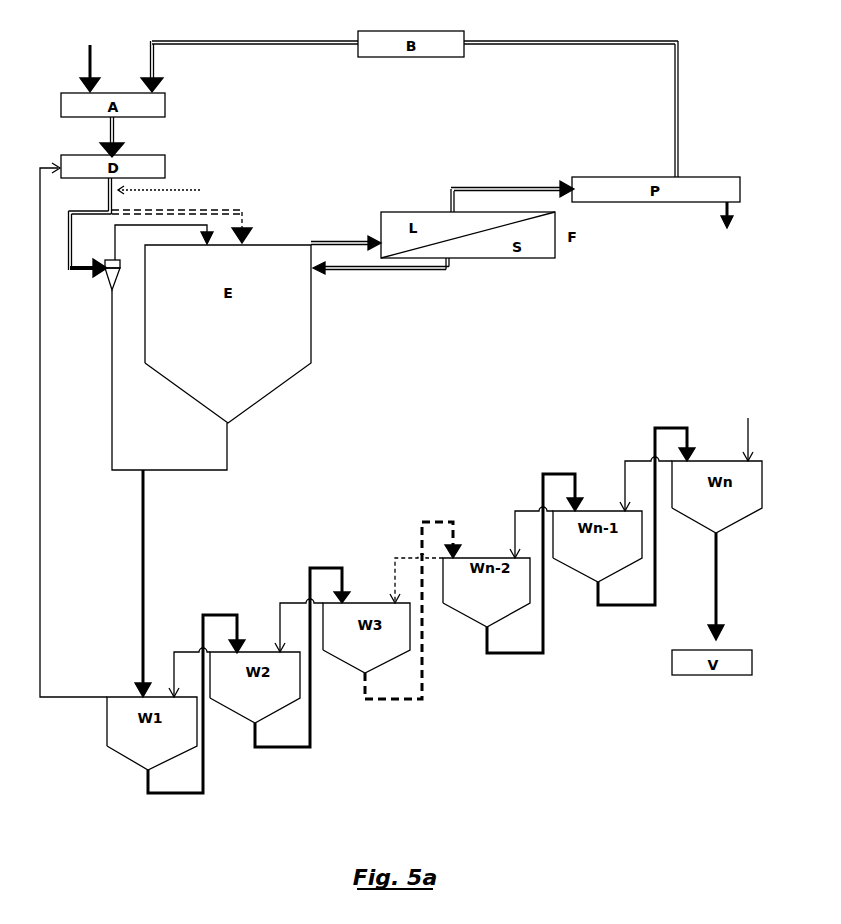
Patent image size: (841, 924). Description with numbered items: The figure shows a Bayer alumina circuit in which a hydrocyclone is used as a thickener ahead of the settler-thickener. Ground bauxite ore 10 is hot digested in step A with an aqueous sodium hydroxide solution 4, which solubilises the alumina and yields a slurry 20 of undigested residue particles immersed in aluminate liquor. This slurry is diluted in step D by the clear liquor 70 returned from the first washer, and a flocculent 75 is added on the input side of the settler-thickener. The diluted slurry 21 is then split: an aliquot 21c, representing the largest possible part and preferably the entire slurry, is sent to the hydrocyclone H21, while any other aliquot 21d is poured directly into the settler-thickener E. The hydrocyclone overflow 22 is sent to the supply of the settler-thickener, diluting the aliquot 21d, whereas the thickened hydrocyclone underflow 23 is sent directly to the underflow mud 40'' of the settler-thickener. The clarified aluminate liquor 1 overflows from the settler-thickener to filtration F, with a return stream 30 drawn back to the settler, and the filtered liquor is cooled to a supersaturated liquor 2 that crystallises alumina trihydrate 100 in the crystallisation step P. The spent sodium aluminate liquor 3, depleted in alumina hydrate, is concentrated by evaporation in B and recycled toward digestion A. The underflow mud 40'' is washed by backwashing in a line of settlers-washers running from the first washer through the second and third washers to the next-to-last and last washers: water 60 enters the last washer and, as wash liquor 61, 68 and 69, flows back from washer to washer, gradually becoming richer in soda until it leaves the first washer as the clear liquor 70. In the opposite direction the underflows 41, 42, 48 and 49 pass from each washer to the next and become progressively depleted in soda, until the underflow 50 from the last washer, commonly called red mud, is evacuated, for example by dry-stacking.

The ground bauxite ore 10 is at (90, 58).
The aqueous sodium hydroxide solution 4 is at (249, 53).
The sodium aluminate liquor 3 is at (571, 96).
The slurry 20 is at (124, 137).
The alumina trihydrate 100 is at (726, 224).
The supersaturated liquor 2 is at (512, 186).
The aluminate liquor overflow 1 is at (346, 233).
The solid fraction return to extractor 30 is at (381, 279).
The clear liquor 70 is at (61, 430).
The slurry 21 is at (90, 224).
The slurry aliquot 21c is at (82, 276).
The flocculent 75 is at (170, 190).
The other slurry aliquot 21d is at (198, 223).
The hydrocyclone overflow 22 is at (164, 242).
The hydrocyclone H21 is at (112, 276).
The hydrocyclone underflow 23 is at (153, 380).
The underflow mud 40'' is at (209, 563).
The underflow 41 is at (196, 720).
The wash water 69 is at (184, 663).
The underflow 42 is at (302, 673).
The overflow from W3 to W2 68 is at (289, 618).
The underflow from Wn-2 to Wn-1 48 is at (535, 577).
The underflow 49 is at (646, 531).
The wash water 61 is at (642, 475).
The wash water 60 is at (750, 432).
The red mud underflow 50 is at (729, 586).